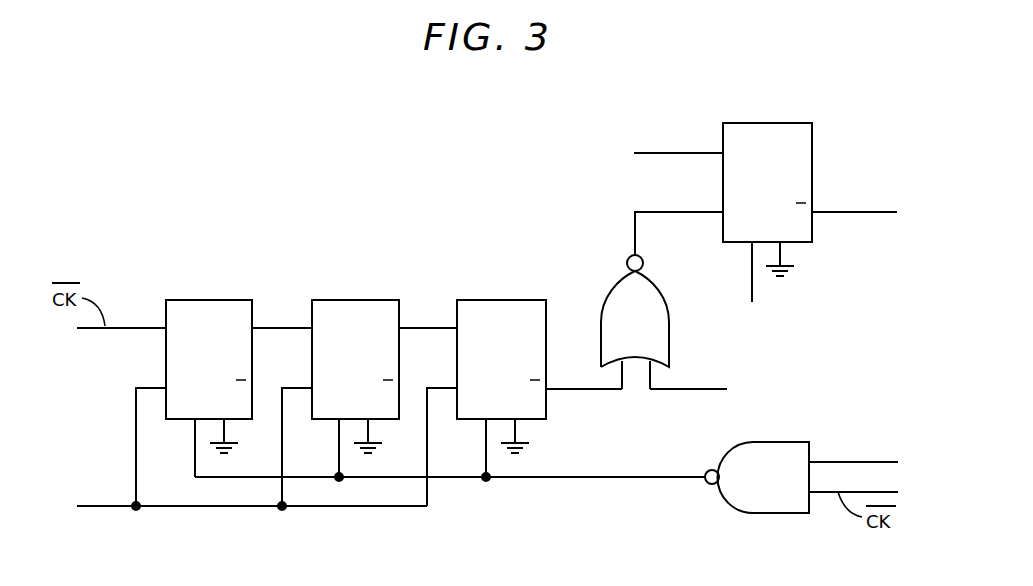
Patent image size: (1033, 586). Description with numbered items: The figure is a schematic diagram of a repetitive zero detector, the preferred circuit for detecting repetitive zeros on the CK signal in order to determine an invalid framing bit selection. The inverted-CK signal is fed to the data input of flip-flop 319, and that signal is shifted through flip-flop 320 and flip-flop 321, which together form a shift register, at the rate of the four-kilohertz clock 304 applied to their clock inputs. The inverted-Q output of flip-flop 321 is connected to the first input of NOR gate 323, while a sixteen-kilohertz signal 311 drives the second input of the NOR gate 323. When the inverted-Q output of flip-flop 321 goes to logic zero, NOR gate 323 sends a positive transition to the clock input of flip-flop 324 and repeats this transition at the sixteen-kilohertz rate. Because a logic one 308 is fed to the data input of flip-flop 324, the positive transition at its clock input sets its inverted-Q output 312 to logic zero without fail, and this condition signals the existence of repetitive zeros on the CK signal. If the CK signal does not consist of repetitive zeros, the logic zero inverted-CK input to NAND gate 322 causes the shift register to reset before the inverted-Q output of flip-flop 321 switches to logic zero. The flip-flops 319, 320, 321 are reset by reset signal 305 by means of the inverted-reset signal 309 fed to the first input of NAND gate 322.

The 4-KHz clock 304 is at (105, 507).
The reset signal 305 is at (752, 302).
The logic "1" input 308 is at (660, 153).
The inverted-reset signal 309 is at (838, 462).
The 16-KHz signal 311 is at (697, 391).
The inverted-Q output 312 is at (845, 212).
The flip-flop 319 is at (214, 300).
The flip-flop 320 is at (353, 300).
The flip-flop 321 is at (508, 300).
The NAND gate 322 is at (727, 503).
The NOR gate 323 is at (617, 285).
The flip-flop 324 is at (770, 123).